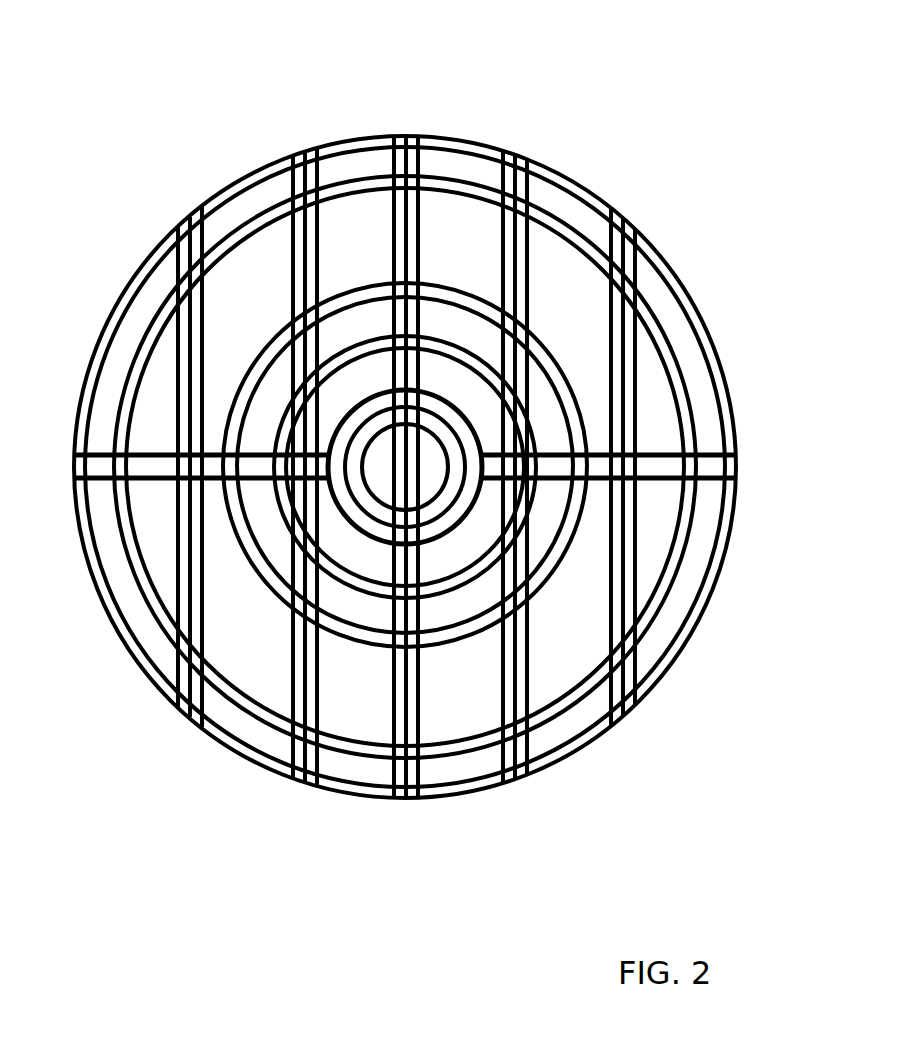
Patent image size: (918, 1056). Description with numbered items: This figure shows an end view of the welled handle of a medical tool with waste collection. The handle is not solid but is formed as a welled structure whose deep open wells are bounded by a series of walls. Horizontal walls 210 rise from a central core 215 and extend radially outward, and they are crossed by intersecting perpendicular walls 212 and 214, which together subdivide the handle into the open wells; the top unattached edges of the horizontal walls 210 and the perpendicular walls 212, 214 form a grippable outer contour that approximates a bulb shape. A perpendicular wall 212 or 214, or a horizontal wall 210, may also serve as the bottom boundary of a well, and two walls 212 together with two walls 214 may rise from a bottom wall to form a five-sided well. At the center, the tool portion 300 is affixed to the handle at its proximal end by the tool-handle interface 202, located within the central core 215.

The horizontal wall 210 is at (728, 468).
The perpendicular wall 212 is at (473, 560).
The perpendicular wall 214 is at (207, 290).
The central core 215 is at (352, 400).
The tool-handle interface 202 is at (456, 458).
The tool portion 300 is at (419, 477).